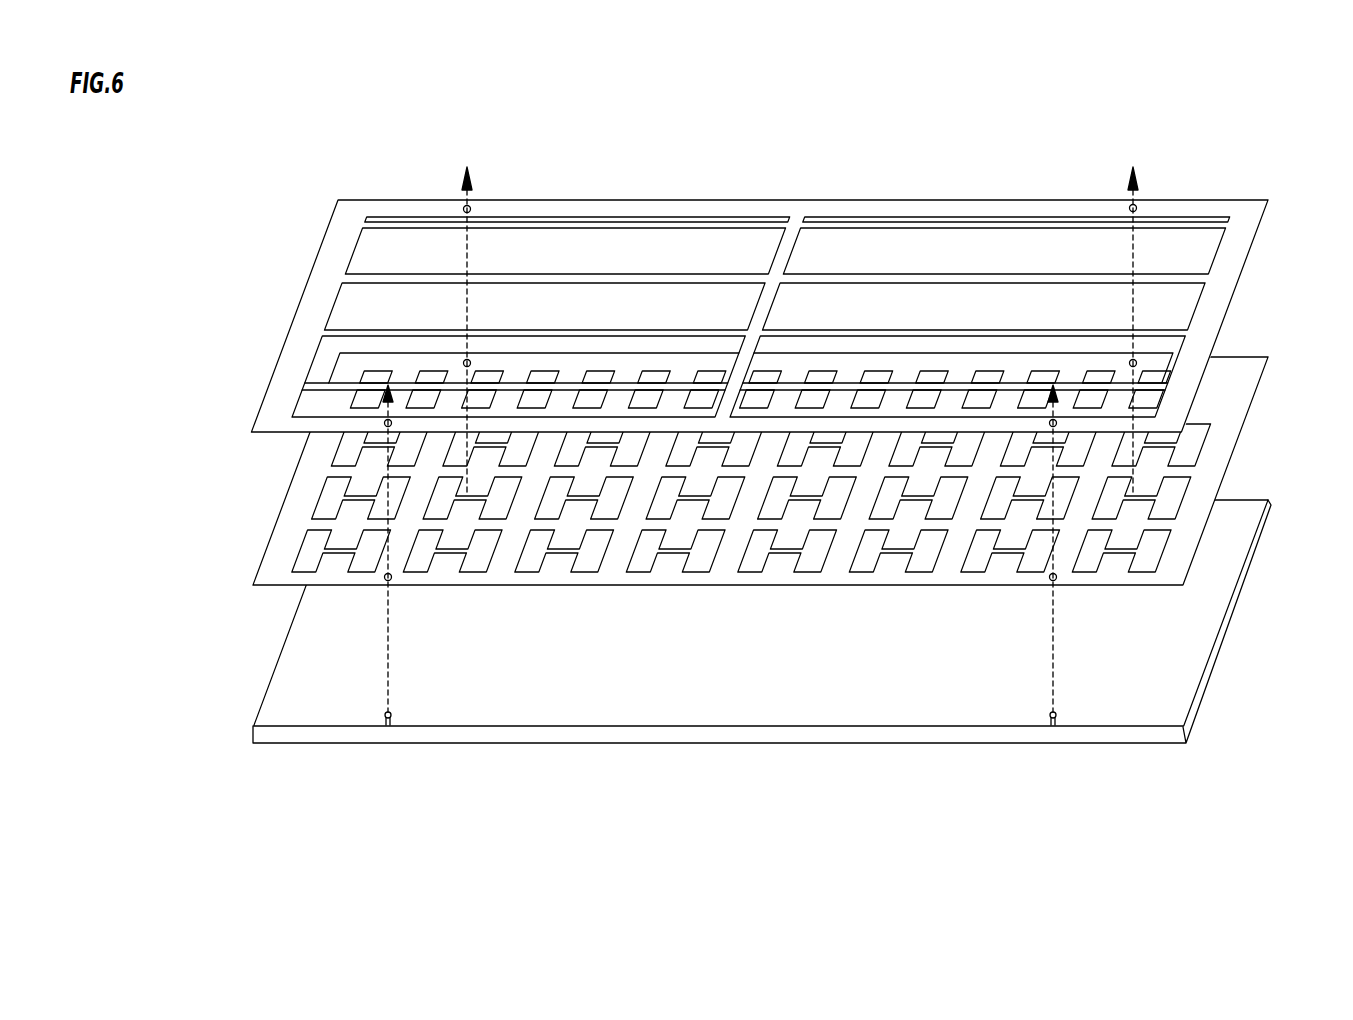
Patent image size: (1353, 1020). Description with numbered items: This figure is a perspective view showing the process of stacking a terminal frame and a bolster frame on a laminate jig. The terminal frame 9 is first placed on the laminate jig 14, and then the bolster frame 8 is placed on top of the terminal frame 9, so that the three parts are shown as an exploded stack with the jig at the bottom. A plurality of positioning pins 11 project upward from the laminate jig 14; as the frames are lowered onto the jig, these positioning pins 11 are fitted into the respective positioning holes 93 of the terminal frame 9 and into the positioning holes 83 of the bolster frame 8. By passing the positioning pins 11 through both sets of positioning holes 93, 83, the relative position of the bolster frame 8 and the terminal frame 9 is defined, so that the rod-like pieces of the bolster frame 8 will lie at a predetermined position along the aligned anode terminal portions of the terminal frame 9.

The bolster frame 8 is at (1212, 302).
The terminal frame 9 is at (1213, 448).
The laminate jig 14 is at (1177, 653).
The positioning holes 83 is at (470, 206).
The positioning holes 93 is at (386, 579).
The positioning pins 11 is at (391, 716).